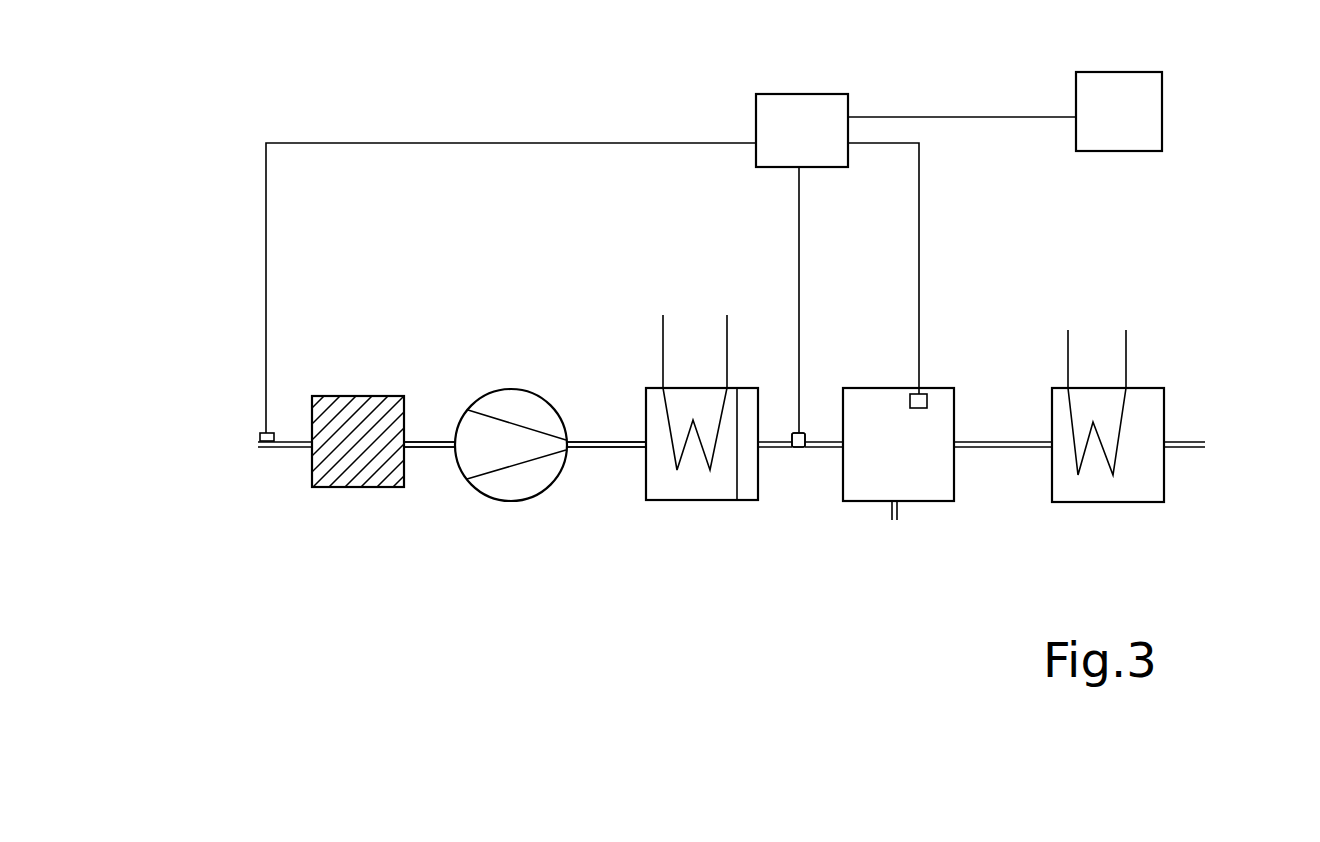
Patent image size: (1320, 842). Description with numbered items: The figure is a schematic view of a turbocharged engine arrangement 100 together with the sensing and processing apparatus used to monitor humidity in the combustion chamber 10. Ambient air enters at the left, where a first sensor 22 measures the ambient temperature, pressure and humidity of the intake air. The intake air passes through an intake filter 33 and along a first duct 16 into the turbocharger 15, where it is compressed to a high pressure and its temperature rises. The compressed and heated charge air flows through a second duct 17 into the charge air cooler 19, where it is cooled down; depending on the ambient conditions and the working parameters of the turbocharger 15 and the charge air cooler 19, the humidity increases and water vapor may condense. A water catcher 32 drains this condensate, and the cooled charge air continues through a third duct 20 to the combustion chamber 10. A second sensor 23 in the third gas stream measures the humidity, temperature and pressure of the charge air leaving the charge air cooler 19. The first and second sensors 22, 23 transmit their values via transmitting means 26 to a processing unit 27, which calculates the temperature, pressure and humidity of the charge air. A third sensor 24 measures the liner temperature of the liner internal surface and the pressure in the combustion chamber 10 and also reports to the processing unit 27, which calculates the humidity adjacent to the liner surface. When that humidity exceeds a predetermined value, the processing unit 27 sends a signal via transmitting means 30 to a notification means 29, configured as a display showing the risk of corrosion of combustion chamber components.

The turbocharged engine arrangement 100 is at (1275, 274).
The transmitting means 26 is at (265, 186).
The processing unit 27 is at (822, 143).
The transmitting means 30 is at (912, 117).
The notification means 29 is at (1163, 97).
The first sensor 22 is at (260, 438).
The intake filter 33 is at (363, 487).
The first duct 16 is at (429, 442).
The turbocharger 15 is at (513, 501).
The second duct 17 is at (598, 442).
The charge air cooler 19 is at (690, 492).
The water catcher 32 is at (762, 483).
The third duct 20 is at (798, 448).
The second sensor 23 is at (800, 433).
The combustion chamber 10 is at (923, 470).
The third sensor 24 is at (930, 392).